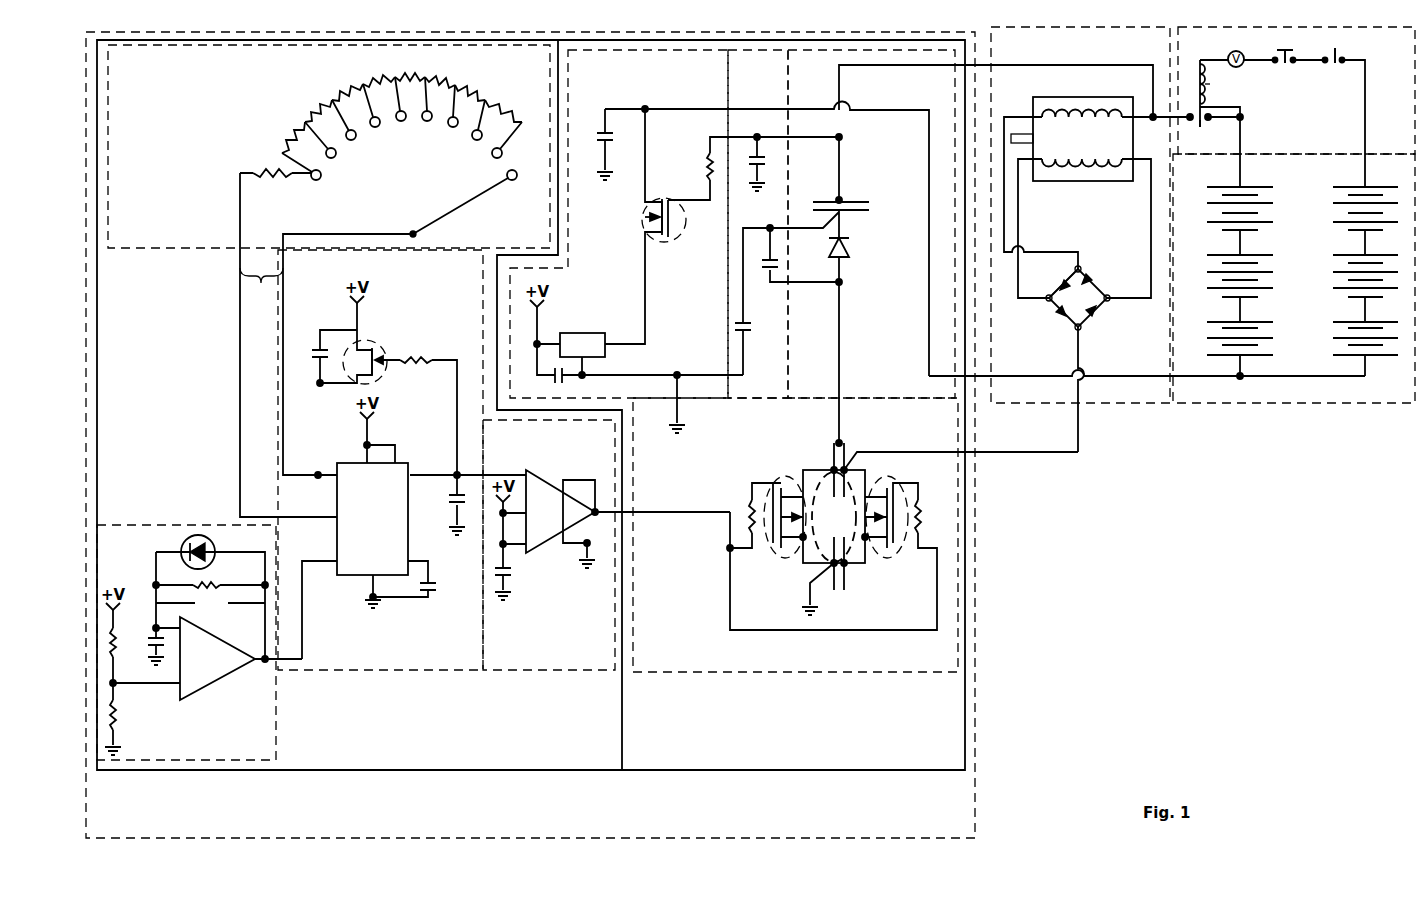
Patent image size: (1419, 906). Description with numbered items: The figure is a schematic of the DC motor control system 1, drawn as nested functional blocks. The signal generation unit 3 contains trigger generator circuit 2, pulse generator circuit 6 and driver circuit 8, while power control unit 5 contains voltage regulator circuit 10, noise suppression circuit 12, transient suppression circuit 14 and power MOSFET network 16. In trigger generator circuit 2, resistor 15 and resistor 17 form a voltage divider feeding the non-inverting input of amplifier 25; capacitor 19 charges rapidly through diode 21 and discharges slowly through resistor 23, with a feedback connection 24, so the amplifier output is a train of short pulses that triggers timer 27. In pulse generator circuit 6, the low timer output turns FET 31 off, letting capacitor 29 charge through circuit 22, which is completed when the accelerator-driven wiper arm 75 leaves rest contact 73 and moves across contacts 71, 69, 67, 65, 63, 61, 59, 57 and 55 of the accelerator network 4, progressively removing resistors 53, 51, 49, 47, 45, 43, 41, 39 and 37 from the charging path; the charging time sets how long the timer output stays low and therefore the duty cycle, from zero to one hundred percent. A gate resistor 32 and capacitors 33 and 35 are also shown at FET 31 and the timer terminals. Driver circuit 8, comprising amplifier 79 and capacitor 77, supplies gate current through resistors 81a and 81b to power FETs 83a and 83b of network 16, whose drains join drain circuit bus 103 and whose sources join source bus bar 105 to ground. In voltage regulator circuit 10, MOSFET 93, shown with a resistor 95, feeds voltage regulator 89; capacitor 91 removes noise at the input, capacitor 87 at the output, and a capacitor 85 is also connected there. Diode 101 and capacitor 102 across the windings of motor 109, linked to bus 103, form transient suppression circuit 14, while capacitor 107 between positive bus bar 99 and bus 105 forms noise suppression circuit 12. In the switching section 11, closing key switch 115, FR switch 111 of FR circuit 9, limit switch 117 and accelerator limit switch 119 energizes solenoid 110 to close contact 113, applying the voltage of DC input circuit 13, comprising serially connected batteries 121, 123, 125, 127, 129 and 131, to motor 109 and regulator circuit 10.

The charging system 1 is at (530, 435).
The trigger generator circuit 2 is at (186, 642).
The signal generation unit 3 is at (359, 405).
The selector switch network 4 is at (524, 243).
The power control unit 5 is at (761, 405).
The pulse generator circuit 6 is at (457, 663).
The driver circuit 8 is at (590, 663).
The FR circuit 9 is at (1149, 397).
The voltage regulator circuit 10 is at (696, 396).
The charging coil and switches circuit 11 is at (1386, 146).
The noise suppression circuit 12 is at (759, 396).
The DC input circuit 13 is at (1384, 400).
The transient suppression circuit 14 is at (933, 397).
The power MOSFET network 16 is at (927, 666).
The resistor 15 is at (118, 642).
The resistor 17 is at (117, 710).
The capacitor 19 is at (148, 646).
The diode 21 is at (182, 543).
The circuit 22 is at (261, 290).
The resistor 23 is at (215, 580).
The conductor 24 is at (195, 603).
The amplifier 25 is at (195, 667).
The timer 27 is at (374, 548).
The capacitor 29 is at (312, 353).
The FET 31 is at (380, 343).
The resistor 32 is at (420, 352).
The capacitor 33 is at (450, 498).
The capacitor 35 is at (438, 585).
The resistor 37 is at (268, 170).
The resistor 39 is at (289, 136).
The resistor 41 is at (314, 112).
The resistor 43 is at (344, 95).
The resistor 45 is at (378, 80).
The resistor 47 is at (410, 74).
The resistor 49 is at (450, 75).
The resistor 51 is at (487, 88).
The resistor 53 is at (521, 110).
The switch contact 55 is at (322, 179).
The switch contact 57 is at (336, 157).
The switch contact 59 is at (356, 139).
The switch contact 61 is at (380, 126).
The switch contact 63 is at (405, 121).
The switch contact 65 is at (430, 121).
The contact 67 is at (455, 127).
The contact 69 is at (479, 140).
The contact 71 is at (502, 153).
The contact 73 is at (516, 178).
The wiper arm 75 is at (462, 205).
The capacitor 77 is at (514, 572).
The amplifier 79 is at (542, 519).
The resistor 81a is at (745, 508).
The resistor 81b is at (925, 510).
The FET 83a is at (774, 545).
The FET 83b is at (898, 545).
The capacitor 85 is at (766, 170).
The capacitor 87 is at (550, 380).
The voltage regulator 89 is at (572, 353).
The capacitor 91 is at (596, 135).
The MOSFET 93 is at (642, 232).
The resistor 95 is at (704, 164).
The positive bus bar 99 is at (852, 198).
The diode 101 is at (852, 243).
The capacitor 102 is at (762, 268).
The drain circuit bus 103 is at (830, 462).
The source bus bar 105 is at (846, 578).
The capacitor 107 is at (752, 333).
The motor 109 is at (1069, 145).
The solenoid 110 is at (1188, 62).
The FR switch 111 is at (1065, 307).
The contact 113 is at (1200, 128).
The key switch 115 is at (1207, 76).
The limit switch 117 is at (1290, 68).
The limit switch 119 is at (1338, 68).
The battery 121 is at (1230, 186).
The battery 123 is at (1226, 255).
The battery 125 is at (1226, 320).
The battery 127 is at (1355, 186).
The battery 129 is at (1352, 255).
The battery 131 is at (1352, 320).